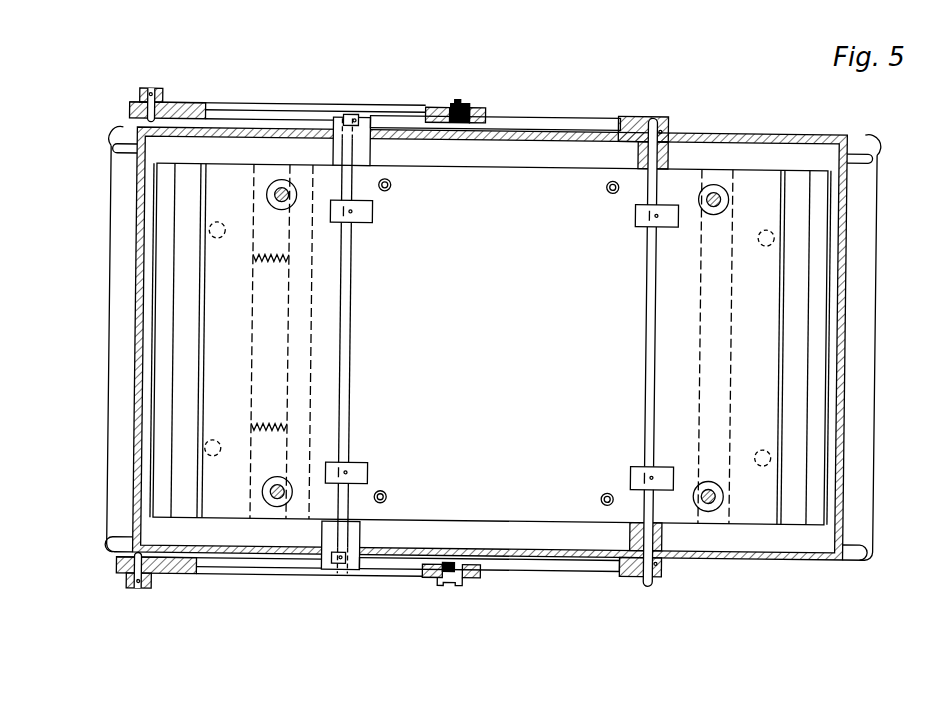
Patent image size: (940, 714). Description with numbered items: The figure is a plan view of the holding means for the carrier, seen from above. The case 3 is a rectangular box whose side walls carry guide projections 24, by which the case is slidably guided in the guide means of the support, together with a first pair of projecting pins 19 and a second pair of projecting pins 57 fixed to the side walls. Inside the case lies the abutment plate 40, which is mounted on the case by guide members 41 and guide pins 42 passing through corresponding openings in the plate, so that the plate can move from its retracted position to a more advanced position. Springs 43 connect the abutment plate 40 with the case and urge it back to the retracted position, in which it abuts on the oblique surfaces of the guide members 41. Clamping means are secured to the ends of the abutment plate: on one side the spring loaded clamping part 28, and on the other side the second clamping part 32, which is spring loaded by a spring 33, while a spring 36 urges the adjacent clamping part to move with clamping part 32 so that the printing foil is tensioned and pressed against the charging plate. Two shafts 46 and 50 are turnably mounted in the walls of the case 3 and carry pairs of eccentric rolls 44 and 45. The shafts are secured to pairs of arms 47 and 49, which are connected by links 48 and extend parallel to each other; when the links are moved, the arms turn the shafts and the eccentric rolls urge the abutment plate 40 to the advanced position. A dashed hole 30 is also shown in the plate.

The case 3 is at (846, 223).
The first pair of projecting pins 19 is at (866, 154).
The guide projections 24 is at (865, 388).
The spring loaded clamping part 28 is at (819, 510).
The hole 30 is at (764, 226).
The second clamping part 32 is at (164, 500).
The spring 33 is at (218, 226).
The spring 36 is at (267, 261).
The abutment plate 40 is at (513, 497).
The guide members 41 is at (725, 189).
The guide pins 42 is at (711, 184).
The springs 43 is at (610, 178).
The eccentric rolls 44 is at (367, 216).
The eccentric rolls 45 is at (635, 219).
The shaft 46 is at (347, 497).
The arms 47 is at (192, 106).
The links 48 is at (405, 106).
The arms 49 is at (533, 117).
The shaft 50 is at (653, 186).
The second pair of projecting pins 57 is at (861, 548).